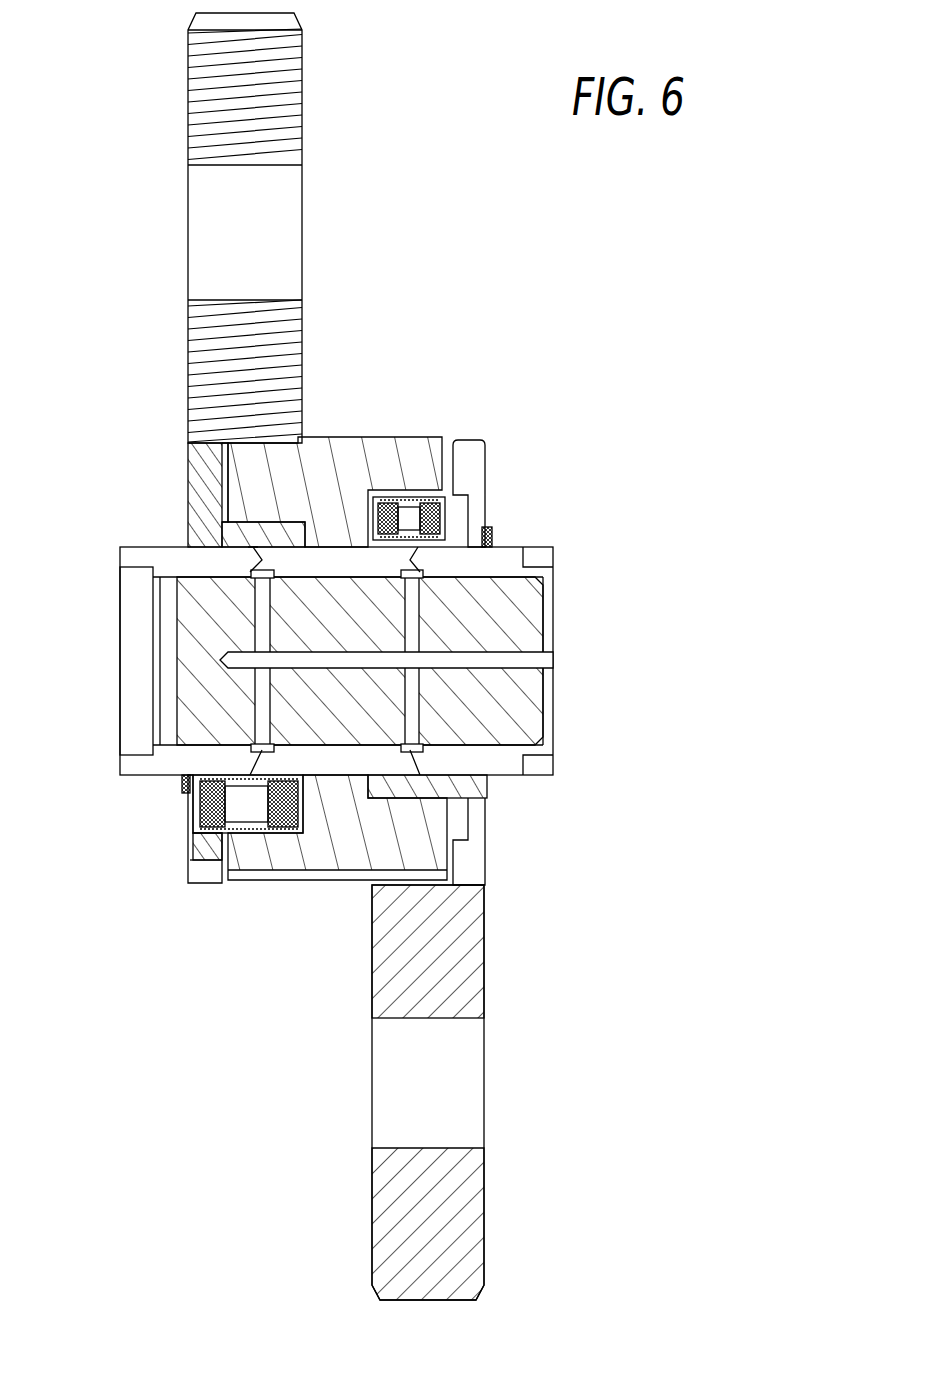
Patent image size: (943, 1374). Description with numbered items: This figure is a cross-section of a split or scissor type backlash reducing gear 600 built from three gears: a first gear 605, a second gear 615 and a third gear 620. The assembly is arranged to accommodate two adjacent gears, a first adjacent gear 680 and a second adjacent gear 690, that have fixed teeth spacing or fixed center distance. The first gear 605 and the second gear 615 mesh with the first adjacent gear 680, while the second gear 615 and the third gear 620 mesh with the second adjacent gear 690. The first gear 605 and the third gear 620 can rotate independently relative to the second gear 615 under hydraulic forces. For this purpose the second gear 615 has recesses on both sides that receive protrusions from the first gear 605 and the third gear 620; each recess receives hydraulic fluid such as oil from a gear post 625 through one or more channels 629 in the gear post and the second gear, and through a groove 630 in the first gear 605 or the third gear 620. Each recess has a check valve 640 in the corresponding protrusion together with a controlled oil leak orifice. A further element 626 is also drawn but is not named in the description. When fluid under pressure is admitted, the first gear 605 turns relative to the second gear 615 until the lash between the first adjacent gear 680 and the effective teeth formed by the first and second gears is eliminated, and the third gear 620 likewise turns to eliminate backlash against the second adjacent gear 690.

The backlash reducing gear 600 is at (376, 672).
The first gear 605 is at (188, 465).
The second gear 615 is at (342, 470).
The third gear 620 is at (465, 455).
The gear post 625 is at (335, 661).
The hole 626 is at (537, 657).
The channels 629 is at (305, 658).
The groove 630 is at (250, 537).
The check valve 640 is at (493, 512).
The first adjacent gear 680 is at (300, 233).
The second adjacent gear 690 is at (465, 1088).